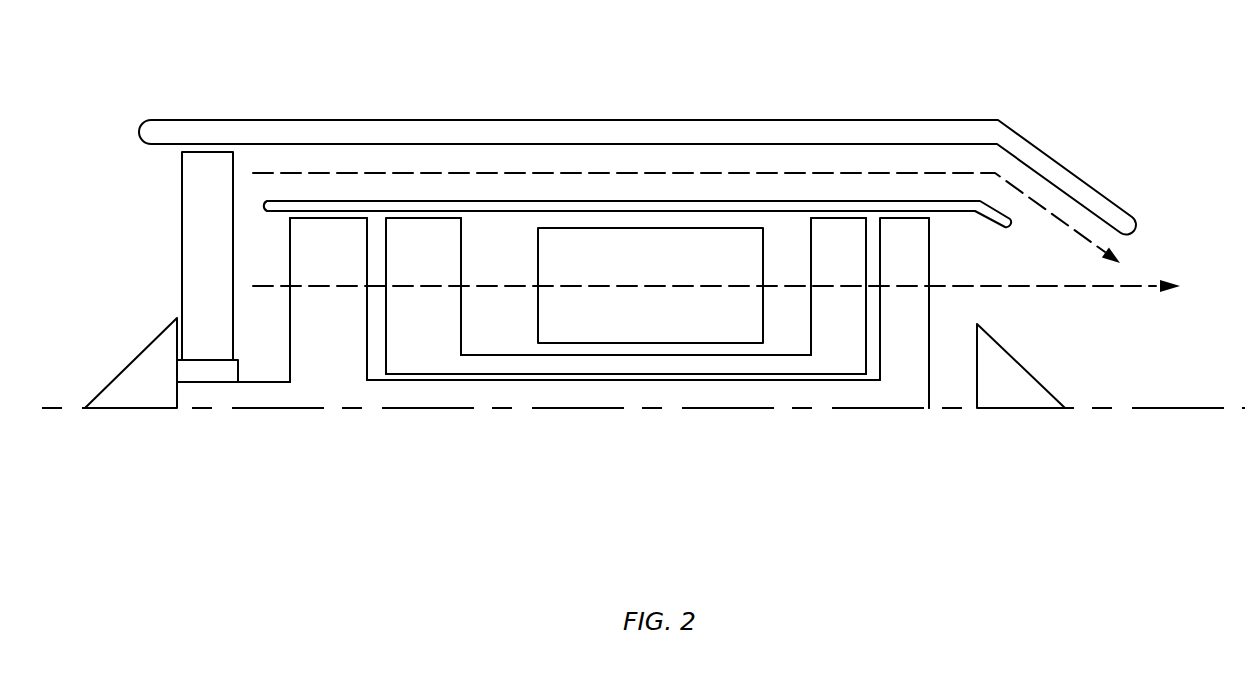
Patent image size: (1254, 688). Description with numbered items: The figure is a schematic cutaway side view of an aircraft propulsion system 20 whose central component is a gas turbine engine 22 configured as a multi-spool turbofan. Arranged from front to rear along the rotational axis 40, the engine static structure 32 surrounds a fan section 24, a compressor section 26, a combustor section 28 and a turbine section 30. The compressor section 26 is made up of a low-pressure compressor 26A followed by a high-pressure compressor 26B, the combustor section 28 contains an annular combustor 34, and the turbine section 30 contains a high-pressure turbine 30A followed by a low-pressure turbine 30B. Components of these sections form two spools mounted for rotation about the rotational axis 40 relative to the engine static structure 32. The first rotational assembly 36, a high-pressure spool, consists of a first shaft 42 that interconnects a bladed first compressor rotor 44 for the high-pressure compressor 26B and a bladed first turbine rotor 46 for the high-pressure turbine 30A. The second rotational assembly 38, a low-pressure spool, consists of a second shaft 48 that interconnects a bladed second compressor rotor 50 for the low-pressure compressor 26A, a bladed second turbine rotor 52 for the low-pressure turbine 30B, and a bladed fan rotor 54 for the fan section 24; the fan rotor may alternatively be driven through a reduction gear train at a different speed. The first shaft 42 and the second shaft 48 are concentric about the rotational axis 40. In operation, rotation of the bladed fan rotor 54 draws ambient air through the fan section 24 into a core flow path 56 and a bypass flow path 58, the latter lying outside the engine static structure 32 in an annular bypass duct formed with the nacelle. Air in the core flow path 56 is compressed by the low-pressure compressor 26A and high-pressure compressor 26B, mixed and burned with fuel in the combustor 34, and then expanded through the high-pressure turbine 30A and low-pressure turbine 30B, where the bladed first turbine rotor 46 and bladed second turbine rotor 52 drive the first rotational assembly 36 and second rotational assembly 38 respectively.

The propulsion system 20 is at (1020, 56).
The gas turbine engine 22 is at (838, 152).
The fan section 24 is at (250, 485).
The compressor section 26 is at (463, 485).
The low-pressure compressor 26A is at (278, 339).
The high-pressure compressor 26B is at (482, 316).
The combustor section 28 is at (763, 485).
The turbine section 30 is at (928, 485).
The high-pressure turbine 30A is at (791, 325).
The low-pressure turbine 30B is at (941, 338).
The engine static structure 32 is at (743, 202).
The combustor 34 is at (639, 266).
The first rotational assembly 36 is at (640, 391).
The second rotational assembly 38 is at (561, 405).
The rotational axis 40 is at (1223, 408).
The first shaft 42 is at (677, 363).
The bladed first compressor rotor 44 is at (409, 266).
The bladed first turbine rotor 46 is at (826, 266).
The second shaft 48 is at (832, 397).
The bladed second compressor rotor 50 is at (314, 266).
The bladed second turbine rotor 52 is at (894, 266).
The bladed fan rotor 54 is at (193, 266).
The core flow path 56 is at (1080, 288).
The bypass flow path 58 is at (427, 172).